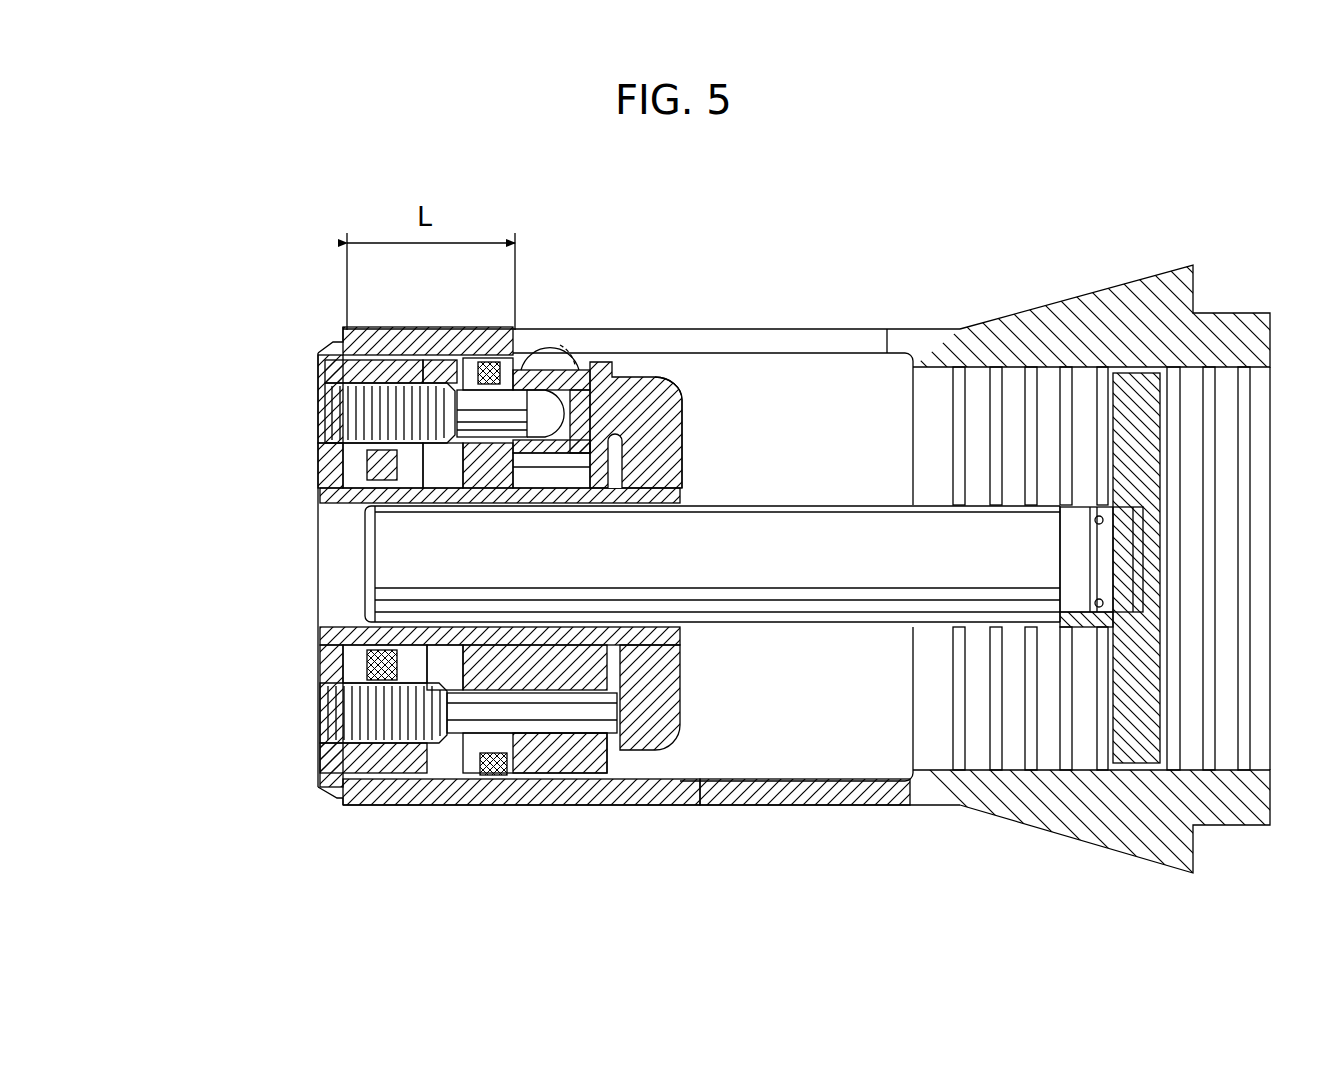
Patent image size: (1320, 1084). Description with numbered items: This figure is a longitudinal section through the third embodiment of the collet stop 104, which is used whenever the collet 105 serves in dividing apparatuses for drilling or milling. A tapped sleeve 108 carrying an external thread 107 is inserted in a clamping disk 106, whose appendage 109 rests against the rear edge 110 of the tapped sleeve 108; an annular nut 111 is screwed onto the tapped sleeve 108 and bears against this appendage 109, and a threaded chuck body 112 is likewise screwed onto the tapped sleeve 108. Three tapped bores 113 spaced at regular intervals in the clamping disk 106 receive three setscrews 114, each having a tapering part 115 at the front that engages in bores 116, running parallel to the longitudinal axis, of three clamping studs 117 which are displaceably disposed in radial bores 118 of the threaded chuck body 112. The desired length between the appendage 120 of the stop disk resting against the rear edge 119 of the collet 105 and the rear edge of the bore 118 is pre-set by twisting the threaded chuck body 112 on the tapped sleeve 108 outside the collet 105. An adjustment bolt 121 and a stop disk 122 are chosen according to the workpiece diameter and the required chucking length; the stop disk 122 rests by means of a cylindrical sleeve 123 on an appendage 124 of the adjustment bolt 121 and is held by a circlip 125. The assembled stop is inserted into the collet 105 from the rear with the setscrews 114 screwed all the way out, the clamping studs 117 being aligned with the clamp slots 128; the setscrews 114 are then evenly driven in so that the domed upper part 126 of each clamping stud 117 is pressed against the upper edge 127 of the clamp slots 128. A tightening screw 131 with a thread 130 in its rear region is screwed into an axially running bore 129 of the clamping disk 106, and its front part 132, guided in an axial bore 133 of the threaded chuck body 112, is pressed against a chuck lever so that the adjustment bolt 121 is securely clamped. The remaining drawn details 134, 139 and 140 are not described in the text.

The collet stop 104 is at (738, 628).
The collet 105 is at (833, 808).
The clamping disk 106 is at (330, 350).
The external thread 107 is at (635, 507).
The tapped sleeve 108 is at (333, 480).
The appendage 109 is at (328, 650).
The rear edge 110 is at (328, 672).
The annular nut 111 is at (330, 472).
The threaded chuck body 112 is at (687, 400).
The tapped bores 113 is at (320, 392).
The setscrews 114 is at (463, 387).
The tapering part 115 is at (593, 367).
The bores 116 is at (670, 367).
The clamping studs 117 is at (549, 352).
The radial bores 118 is at (460, 507).
The rear edge 119 is at (365, 803).
The appendage 120 is at (333, 797).
The adjustment bolt 121 is at (712, 584).
The stop disk 122 is at (1133, 380).
The cylindrical sleeve 123 is at (1075, 617).
The appendage 124 is at (1080, 565).
The circlip 125 is at (1115, 603).
The upper part 126 is at (577, 347).
The upper edge 127 is at (505, 347).
The clamp slots 128 is at (887, 345).
The axially running bore 129 is at (320, 778).
The thread 130 is at (318, 722).
The tightening screw 131 is at (560, 770).
The front part 132 is at (628, 768).
The axial bore 133 is at (455, 803).
The lower pin 134 is at (663, 717).
The lower bearing 139 is at (522, 627).
The lower O-ring 140 is at (505, 800).